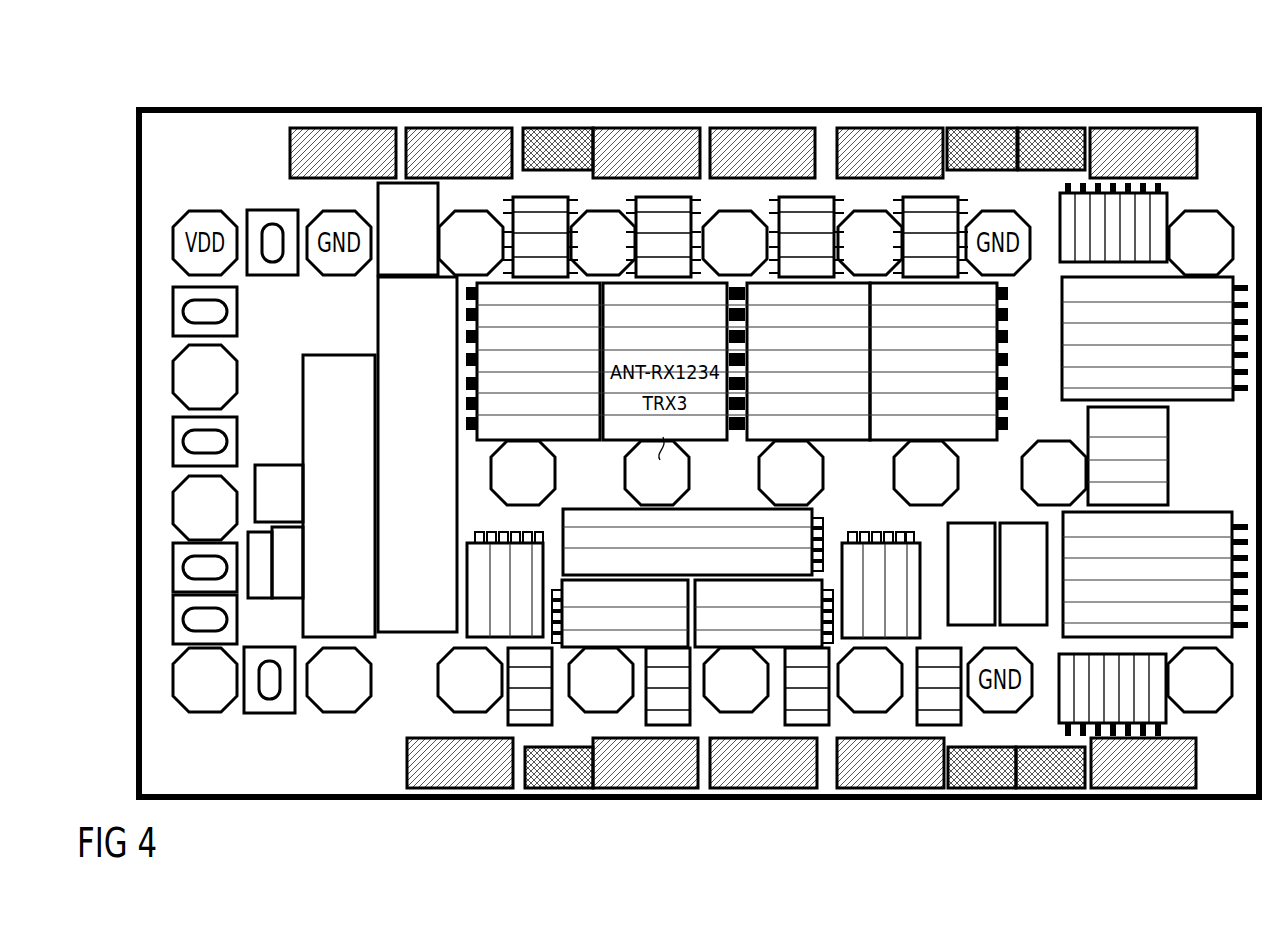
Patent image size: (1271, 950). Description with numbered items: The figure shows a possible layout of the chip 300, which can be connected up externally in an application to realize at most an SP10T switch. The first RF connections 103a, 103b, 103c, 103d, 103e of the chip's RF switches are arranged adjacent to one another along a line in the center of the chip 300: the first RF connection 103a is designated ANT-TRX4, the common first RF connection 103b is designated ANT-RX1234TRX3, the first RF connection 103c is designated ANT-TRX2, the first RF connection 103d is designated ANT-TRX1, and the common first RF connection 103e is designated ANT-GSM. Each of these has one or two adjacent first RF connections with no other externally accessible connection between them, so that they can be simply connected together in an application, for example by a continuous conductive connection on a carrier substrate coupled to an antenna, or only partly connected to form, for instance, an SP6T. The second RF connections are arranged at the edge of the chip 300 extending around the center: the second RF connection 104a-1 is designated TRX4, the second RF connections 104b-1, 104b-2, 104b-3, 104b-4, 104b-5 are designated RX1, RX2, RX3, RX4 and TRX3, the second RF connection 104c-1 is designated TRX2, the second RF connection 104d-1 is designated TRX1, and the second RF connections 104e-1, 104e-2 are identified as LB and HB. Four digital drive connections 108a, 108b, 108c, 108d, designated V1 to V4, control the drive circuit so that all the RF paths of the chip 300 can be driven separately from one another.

The chip 300 is at (1100, 94).
The second RF connection 104a-1 is at (463, 227).
The second RF connection 104b-5 is at (597, 227).
The second RF connection 104c-1 is at (733, 227).
The second RF connection 104d-1 is at (867, 227).
The second RF connection 104e-2 is at (1210, 228).
The second RF connection 104e-1 is at (1217, 707).
The second RF connection 104b-1 is at (468, 695).
The second RF connection 104b-2 is at (602, 695).
The second RF connection 104b-3 is at (737, 695).
The second RF connection 104b-4 is at (869, 700).
The first RF connection 103a is at (583, 467).
The first RF connection 103b is at (626, 475).
The first RF connection 103c is at (760, 477).
The first RF connection 103d is at (893, 470).
The first RF connection 103e is at (1022, 470).
The digital drive connection 108a is at (342, 697).
The digital drive connection 108b is at (182, 680).
The digital drive connection 108c is at (173, 513).
The digital drive connection 108d is at (173, 381).